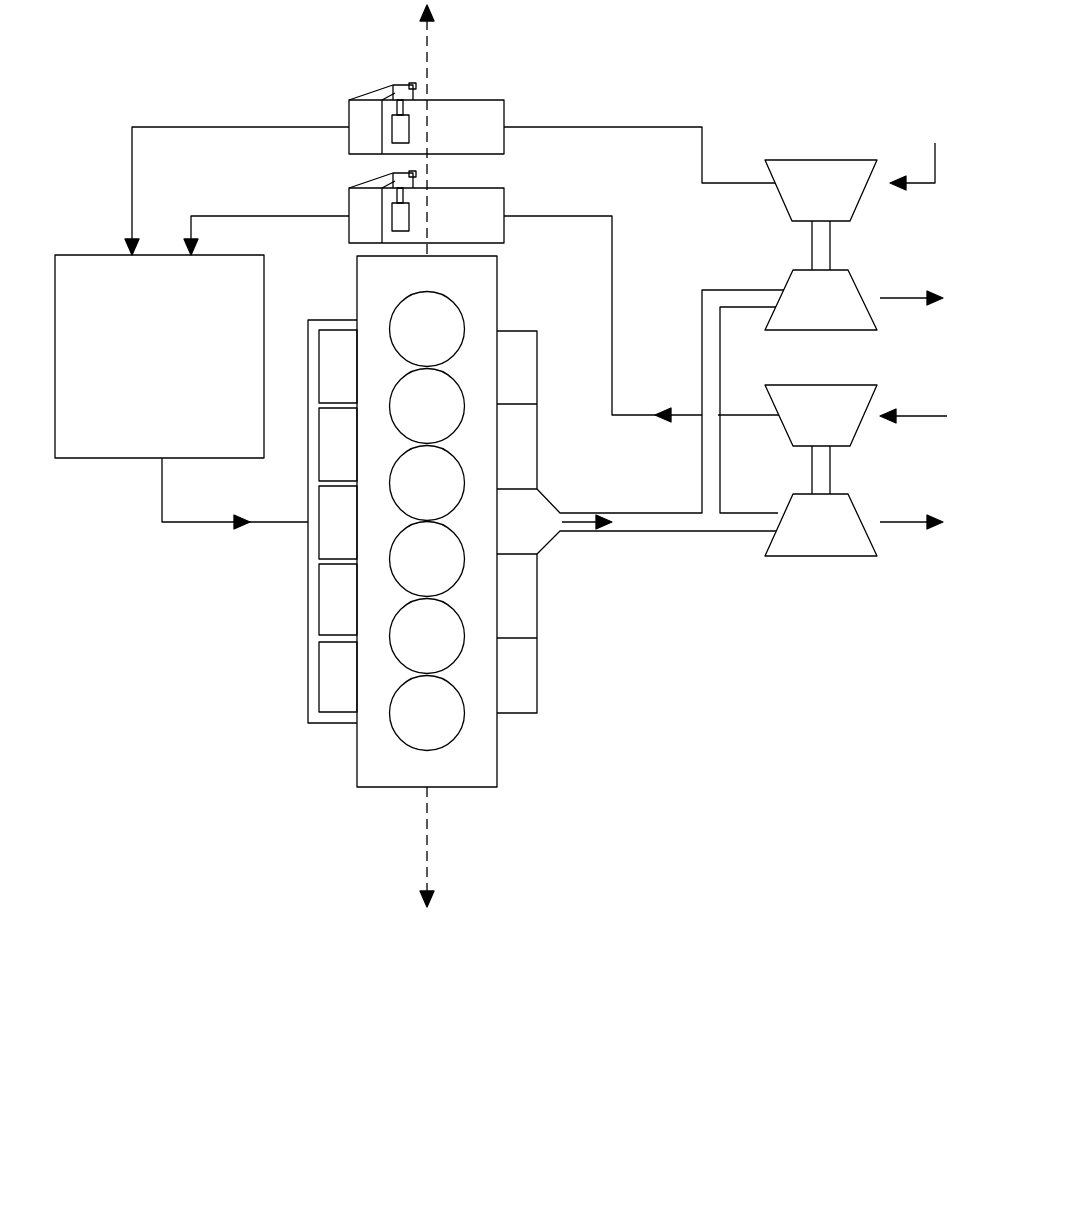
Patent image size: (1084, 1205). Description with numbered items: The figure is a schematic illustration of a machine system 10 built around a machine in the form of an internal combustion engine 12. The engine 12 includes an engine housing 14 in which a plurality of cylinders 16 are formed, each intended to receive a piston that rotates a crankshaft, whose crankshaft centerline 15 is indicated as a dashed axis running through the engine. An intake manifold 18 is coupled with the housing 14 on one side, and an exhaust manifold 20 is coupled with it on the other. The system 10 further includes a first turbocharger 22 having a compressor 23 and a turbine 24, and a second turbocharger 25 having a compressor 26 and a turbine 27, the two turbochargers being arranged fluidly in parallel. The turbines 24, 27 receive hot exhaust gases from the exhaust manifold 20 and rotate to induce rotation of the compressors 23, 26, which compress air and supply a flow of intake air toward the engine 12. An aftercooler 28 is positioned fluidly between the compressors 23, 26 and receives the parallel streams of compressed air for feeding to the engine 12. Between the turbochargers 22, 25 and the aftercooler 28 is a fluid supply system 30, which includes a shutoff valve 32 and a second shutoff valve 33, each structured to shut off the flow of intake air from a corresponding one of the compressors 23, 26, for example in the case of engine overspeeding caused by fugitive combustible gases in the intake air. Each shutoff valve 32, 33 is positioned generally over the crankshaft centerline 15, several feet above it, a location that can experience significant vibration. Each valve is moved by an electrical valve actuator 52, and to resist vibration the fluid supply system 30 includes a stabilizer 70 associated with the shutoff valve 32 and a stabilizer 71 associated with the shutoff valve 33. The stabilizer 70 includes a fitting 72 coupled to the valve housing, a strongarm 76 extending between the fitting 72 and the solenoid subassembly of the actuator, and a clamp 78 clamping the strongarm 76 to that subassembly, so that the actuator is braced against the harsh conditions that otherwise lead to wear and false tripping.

The machine system 10 is at (210, 648).
The engine 12 is at (337, 742).
The engine housing 14 is at (498, 760).
The crankshaft centerline 15 is at (428, 855).
The cylinder 16 is at (453, 700).
The intake manifold 18 is at (308, 596).
The exhaust manifold 20 is at (538, 598).
The first turbocharger 22 is at (890, 250).
The compressor 23 is at (872, 160).
The turbine 24 is at (800, 270).
The second turbocharger 25 is at (890, 480).
The compressor 26 is at (872, 385).
The turbine 27 is at (798, 494).
The aftercooler 28 is at (84, 255).
The fluid supply system 30 is at (592, 100).
The shutoff valve 32 is at (505, 103).
The shutoff valve 33 is at (505, 189).
The electrical valve actuator 52 is at (414, 108).
The stabilizer 70 is at (377, 78).
The stabilizer 71 is at (357, 175).
The fitting 72 is at (348, 110).
The strongarm 76 is at (361, 94).
The clamp 78 is at (410, 82).